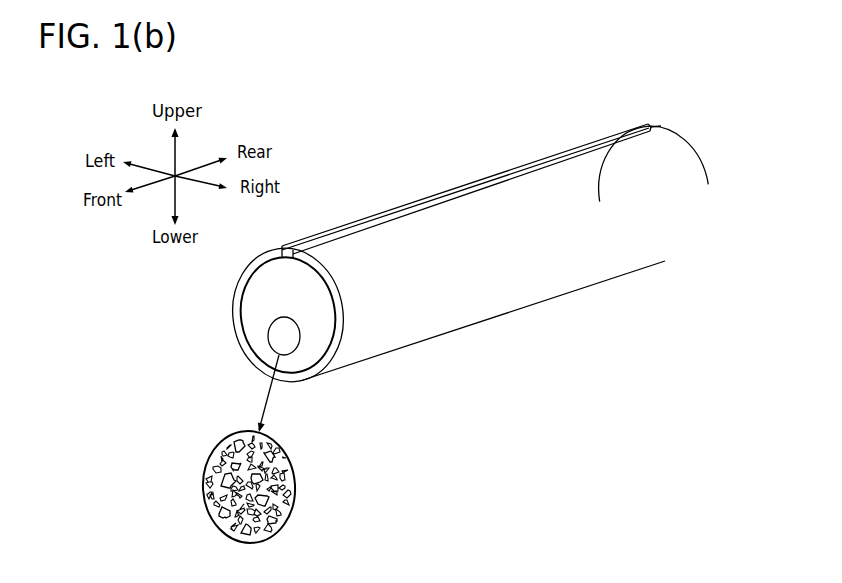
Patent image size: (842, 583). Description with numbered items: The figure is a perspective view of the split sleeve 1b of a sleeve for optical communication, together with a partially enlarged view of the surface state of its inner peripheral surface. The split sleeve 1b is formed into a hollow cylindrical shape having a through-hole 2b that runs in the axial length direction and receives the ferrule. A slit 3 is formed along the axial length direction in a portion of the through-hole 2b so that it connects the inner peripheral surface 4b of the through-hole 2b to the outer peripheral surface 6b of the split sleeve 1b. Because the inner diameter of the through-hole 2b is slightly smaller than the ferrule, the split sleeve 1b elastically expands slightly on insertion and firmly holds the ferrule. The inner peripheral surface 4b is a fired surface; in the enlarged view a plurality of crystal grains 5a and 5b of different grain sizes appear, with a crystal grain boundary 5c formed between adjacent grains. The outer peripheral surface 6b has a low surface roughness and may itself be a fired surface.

The split sleeve 1b is at (466, 224).
The through-hole 2b is at (259, 295).
The slit 3 is at (598, 138).
The inner peripheral surface 4b is at (267, 313).
The crystal grain 5a is at (285, 498).
The crystal grain 5b is at (297, 497).
The crystal grain boundary 5c is at (290, 458).
The outer peripheral surface 6b is at (612, 262).